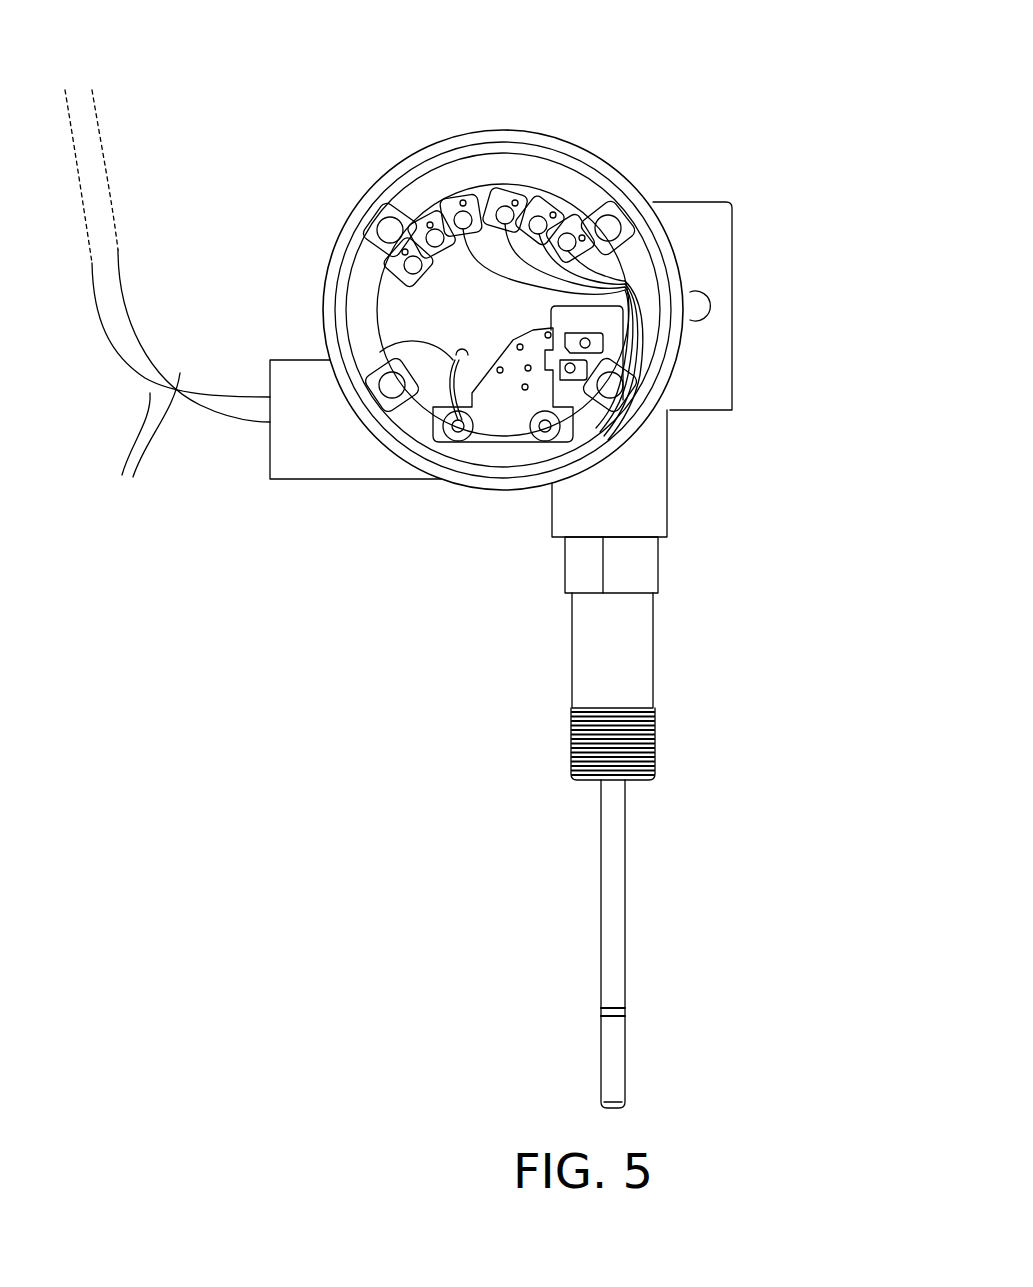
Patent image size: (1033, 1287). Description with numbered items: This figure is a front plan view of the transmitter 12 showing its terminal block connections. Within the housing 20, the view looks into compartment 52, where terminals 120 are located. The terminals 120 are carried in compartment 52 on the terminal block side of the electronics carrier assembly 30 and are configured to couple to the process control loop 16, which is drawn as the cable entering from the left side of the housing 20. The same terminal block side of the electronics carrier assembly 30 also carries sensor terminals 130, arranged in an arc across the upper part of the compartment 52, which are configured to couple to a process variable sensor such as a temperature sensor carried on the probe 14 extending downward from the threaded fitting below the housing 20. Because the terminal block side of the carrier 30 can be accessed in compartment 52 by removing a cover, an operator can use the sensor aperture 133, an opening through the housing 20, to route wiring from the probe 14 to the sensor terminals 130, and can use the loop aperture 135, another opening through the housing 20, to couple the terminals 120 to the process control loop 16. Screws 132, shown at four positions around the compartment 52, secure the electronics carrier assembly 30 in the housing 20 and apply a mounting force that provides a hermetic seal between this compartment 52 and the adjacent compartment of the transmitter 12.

The transmitter 12 is at (504, 410).
The probe 14 is at (610, 1052).
The process control loop 16 is at (167, 297).
The housing 20 is at (578, 140).
The electronics carrier assembly 30 is at (423, 308).
The compartment 52 is at (402, 338).
The terminals 120 is at (545, 432).
The sensor terminals 130 is at (515, 202).
The screws 132 is at (383, 230).
The sensor aperture 133 is at (590, 445).
The loop aperture 135 is at (513, 340).